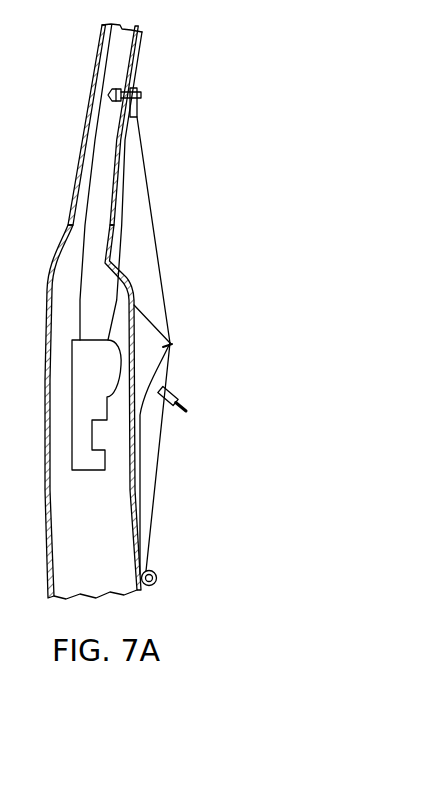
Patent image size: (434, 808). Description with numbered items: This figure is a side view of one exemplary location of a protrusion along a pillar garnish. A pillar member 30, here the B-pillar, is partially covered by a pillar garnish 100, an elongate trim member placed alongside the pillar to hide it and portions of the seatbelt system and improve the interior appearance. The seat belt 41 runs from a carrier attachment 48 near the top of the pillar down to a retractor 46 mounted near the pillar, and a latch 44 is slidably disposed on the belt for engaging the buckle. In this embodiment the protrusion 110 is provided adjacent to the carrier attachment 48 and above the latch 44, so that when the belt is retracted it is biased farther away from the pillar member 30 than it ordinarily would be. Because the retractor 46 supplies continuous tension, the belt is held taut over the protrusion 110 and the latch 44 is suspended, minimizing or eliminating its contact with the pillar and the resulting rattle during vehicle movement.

The pillar member 30 is at (96, 68).
The carrier attachment 48 is at (142, 104).
The seat belt 41 is at (151, 202).
The protrusion 110 is at (171, 344).
The latch 44 is at (188, 383).
The retractor 46 is at (108, 381).
The pillar garnish 100 is at (141, 491).